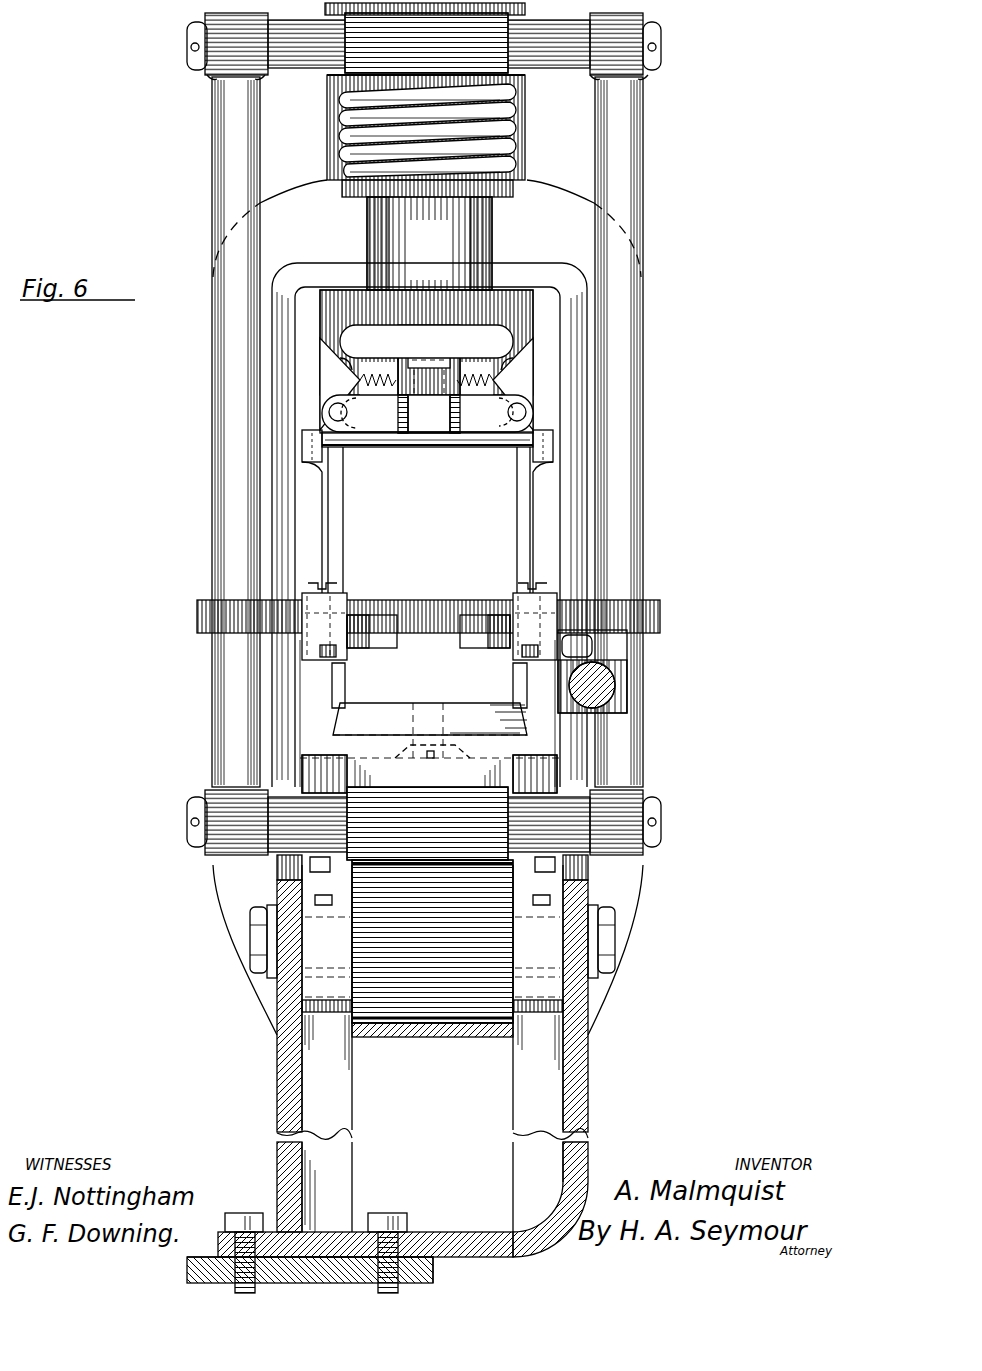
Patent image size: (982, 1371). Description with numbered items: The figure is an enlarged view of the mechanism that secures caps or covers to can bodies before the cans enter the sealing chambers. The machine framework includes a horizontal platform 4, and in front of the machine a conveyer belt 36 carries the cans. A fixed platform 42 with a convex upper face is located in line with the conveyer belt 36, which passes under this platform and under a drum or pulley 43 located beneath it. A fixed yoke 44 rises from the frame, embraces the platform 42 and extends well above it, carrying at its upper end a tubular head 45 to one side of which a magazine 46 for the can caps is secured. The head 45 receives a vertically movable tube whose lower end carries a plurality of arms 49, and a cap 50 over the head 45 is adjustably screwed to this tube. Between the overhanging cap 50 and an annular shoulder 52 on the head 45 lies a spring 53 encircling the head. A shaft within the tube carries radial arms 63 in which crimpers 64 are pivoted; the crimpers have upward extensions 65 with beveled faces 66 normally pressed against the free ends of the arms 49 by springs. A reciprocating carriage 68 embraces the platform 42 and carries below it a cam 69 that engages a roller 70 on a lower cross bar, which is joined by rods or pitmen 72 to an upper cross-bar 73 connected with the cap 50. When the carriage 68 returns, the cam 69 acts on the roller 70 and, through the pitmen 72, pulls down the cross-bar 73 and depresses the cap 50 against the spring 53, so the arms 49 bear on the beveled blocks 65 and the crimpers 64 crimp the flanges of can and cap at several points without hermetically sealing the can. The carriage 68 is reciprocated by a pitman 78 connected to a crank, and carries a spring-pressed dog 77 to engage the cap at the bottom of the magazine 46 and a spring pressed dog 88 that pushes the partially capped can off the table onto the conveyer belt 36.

The horizontal platform 4 is at (425, 1272).
The conveyer belt 36 is at (432, 1040).
The fixed platform 42 is at (430, 721).
The drum or pulley 43 is at (432, 941).
The fixed yoke 44 is at (200, 690).
The head 45 is at (429, 243).
The magazine 46 is at (525, 163).
The arms 49 is at (426, 361).
The cap 50 is at (347, 93).
The annular shoulder 52 is at (347, 197).
The spring 53 is at (500, 128).
The radial arms 63 is at (427, 413).
The crimpers 64 is at (362, 447).
The upward extensions 65 is at (426, 384).
The beveled faces 66 is at (332, 337).
The carriage 68 is at (343, 529).
The cam 69 is at (429, 769).
The roller 70 is at (416, 815).
The rods or pitmen 72 is at (212, 441).
The cross-bar 73 is at (303, 64).
The spring-pressed dog 77 is at (412, 634).
The pitman 78 is at (627, 685).
The spring pressed dog 88 is at (460, 628).